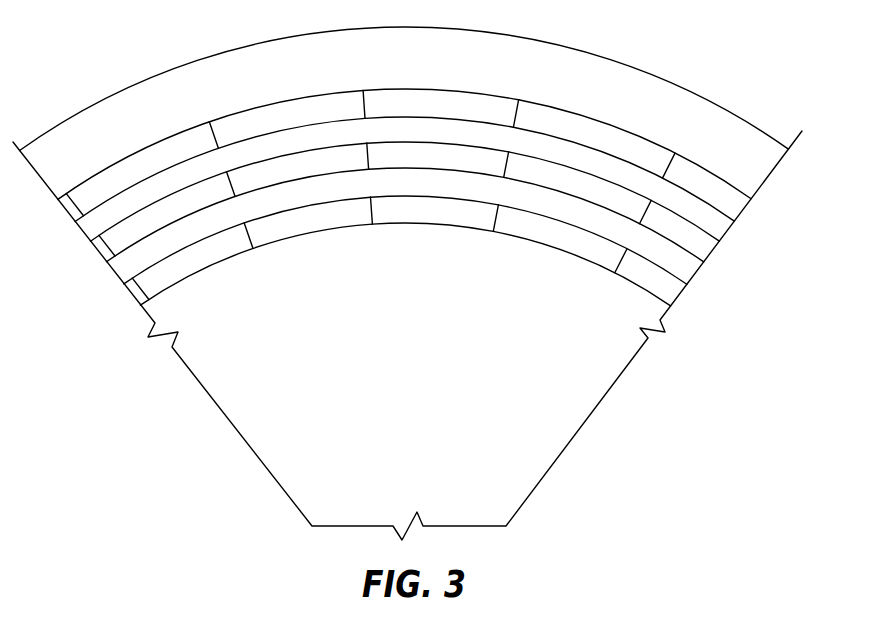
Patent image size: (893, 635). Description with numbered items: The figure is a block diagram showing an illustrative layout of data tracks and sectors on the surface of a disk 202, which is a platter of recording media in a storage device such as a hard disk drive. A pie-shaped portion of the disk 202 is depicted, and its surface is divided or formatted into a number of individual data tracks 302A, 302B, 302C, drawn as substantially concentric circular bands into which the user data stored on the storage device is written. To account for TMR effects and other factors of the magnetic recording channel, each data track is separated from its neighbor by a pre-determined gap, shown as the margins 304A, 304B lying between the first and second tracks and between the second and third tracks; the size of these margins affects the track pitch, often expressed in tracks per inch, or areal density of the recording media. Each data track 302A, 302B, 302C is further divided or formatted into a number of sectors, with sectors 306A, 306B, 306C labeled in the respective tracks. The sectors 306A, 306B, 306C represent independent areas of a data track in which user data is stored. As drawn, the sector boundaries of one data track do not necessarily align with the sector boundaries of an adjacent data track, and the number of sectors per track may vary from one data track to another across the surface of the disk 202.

The disk 202 is at (407, 283).
The data track 302A is at (431, 155).
The data track 302B is at (431, 205).
The data track 302C is at (429, 253).
The margin 304A is at (92, 252).
The margin 304B is at (127, 297).
The sector 306A is at (440, 108).
The sector 306B is at (438, 159).
The sector 306C is at (435, 213).